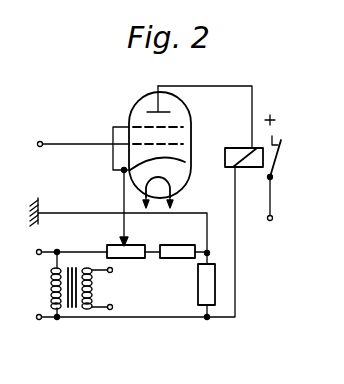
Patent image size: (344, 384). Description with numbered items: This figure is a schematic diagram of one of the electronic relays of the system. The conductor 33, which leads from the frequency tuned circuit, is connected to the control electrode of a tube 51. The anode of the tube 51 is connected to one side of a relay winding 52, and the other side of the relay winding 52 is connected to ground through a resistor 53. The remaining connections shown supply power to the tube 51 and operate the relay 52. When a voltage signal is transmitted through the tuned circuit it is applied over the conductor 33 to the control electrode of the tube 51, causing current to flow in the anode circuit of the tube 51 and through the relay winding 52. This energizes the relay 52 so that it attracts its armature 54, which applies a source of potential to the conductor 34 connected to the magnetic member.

The tube 51 is at (137, 100).
The conductor 33 is at (65, 147).
The relay winding 52 is at (236, 147).
The armature 54 is at (283, 152).
The conductor 34 is at (275, 203).
The resistor 53 is at (198, 290).